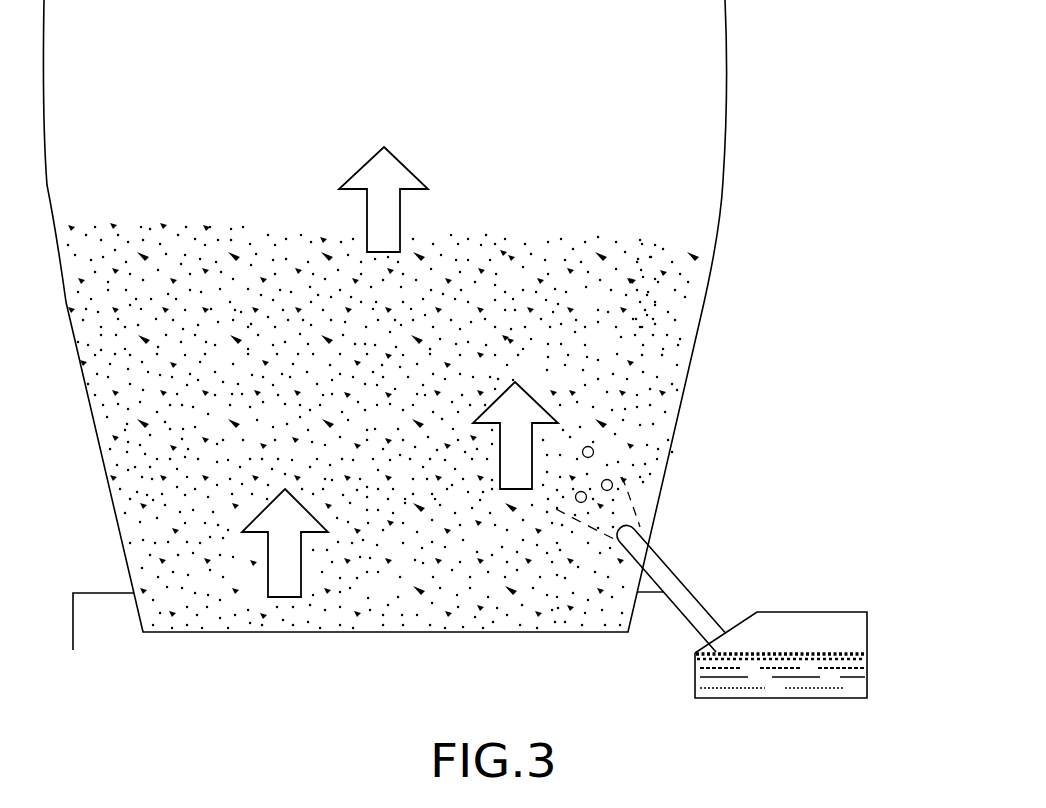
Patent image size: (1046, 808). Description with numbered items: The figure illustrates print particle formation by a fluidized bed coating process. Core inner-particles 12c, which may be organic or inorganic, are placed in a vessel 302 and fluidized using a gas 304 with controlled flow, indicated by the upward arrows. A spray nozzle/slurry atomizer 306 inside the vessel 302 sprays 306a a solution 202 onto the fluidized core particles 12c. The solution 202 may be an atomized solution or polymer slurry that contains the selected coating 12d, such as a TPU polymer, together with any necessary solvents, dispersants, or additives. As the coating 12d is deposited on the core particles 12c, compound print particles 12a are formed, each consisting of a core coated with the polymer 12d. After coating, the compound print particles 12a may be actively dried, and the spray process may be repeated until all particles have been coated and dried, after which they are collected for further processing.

The vessel 302 is at (723, 181).
The gas 304 is at (360, 170).
The core inner-particle 12c is at (596, 337).
The compound print particle 12a is at (593, 453).
The spray 306a is at (632, 503).
The spray nozzle/slurry atomizer 306 is at (662, 558).
The solution 202 is at (797, 668).
The polymer coating 12d is at (867, 677).